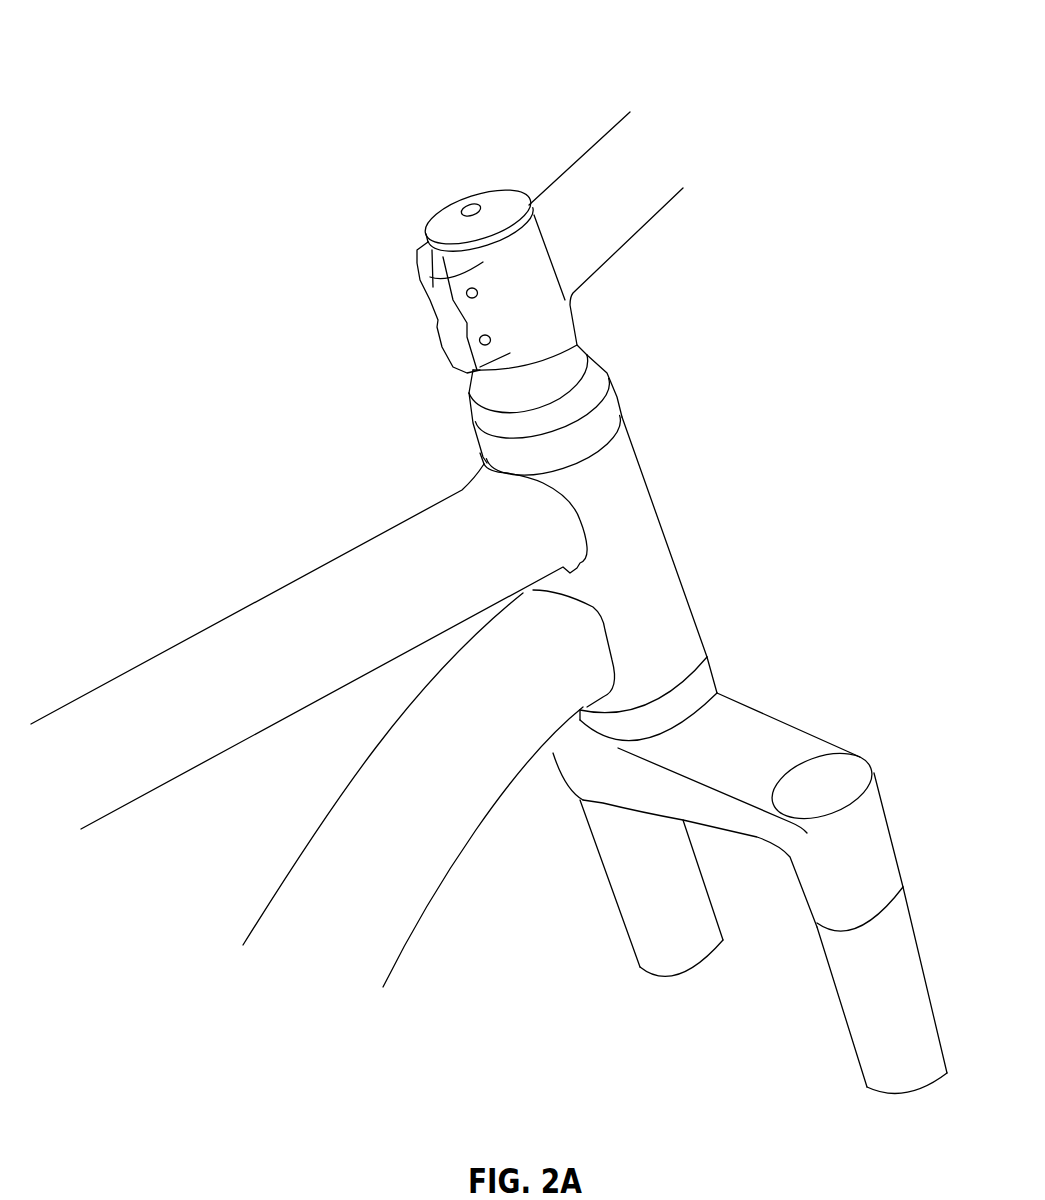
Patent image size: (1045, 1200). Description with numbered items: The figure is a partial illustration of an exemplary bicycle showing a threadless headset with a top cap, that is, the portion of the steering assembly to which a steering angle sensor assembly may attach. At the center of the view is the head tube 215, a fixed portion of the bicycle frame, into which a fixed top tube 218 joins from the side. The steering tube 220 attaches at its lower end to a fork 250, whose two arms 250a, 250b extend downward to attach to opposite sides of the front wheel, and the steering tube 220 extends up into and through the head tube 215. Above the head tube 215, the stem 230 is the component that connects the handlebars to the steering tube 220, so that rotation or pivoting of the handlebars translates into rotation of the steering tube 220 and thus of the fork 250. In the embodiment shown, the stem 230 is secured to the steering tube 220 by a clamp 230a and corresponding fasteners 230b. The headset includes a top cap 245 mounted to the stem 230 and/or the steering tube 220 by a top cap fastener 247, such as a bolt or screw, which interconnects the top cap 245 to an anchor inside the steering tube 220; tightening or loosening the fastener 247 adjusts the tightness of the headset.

The head tube 215 is at (627, 507).
The top tube 218 is at (217, 659).
The steering tube 220 is at (700, 690).
The stem 230 is at (593, 183).
The clamp 230a is at (422, 263).
The fasteners 230b is at (479, 342).
The top cap 245 is at (433, 222).
The top cap fastener 247 is at (468, 205).
The fork 250 is at (810, 710).
The fork arm 250a is at (643, 910).
The fork arm 250b is at (867, 997).